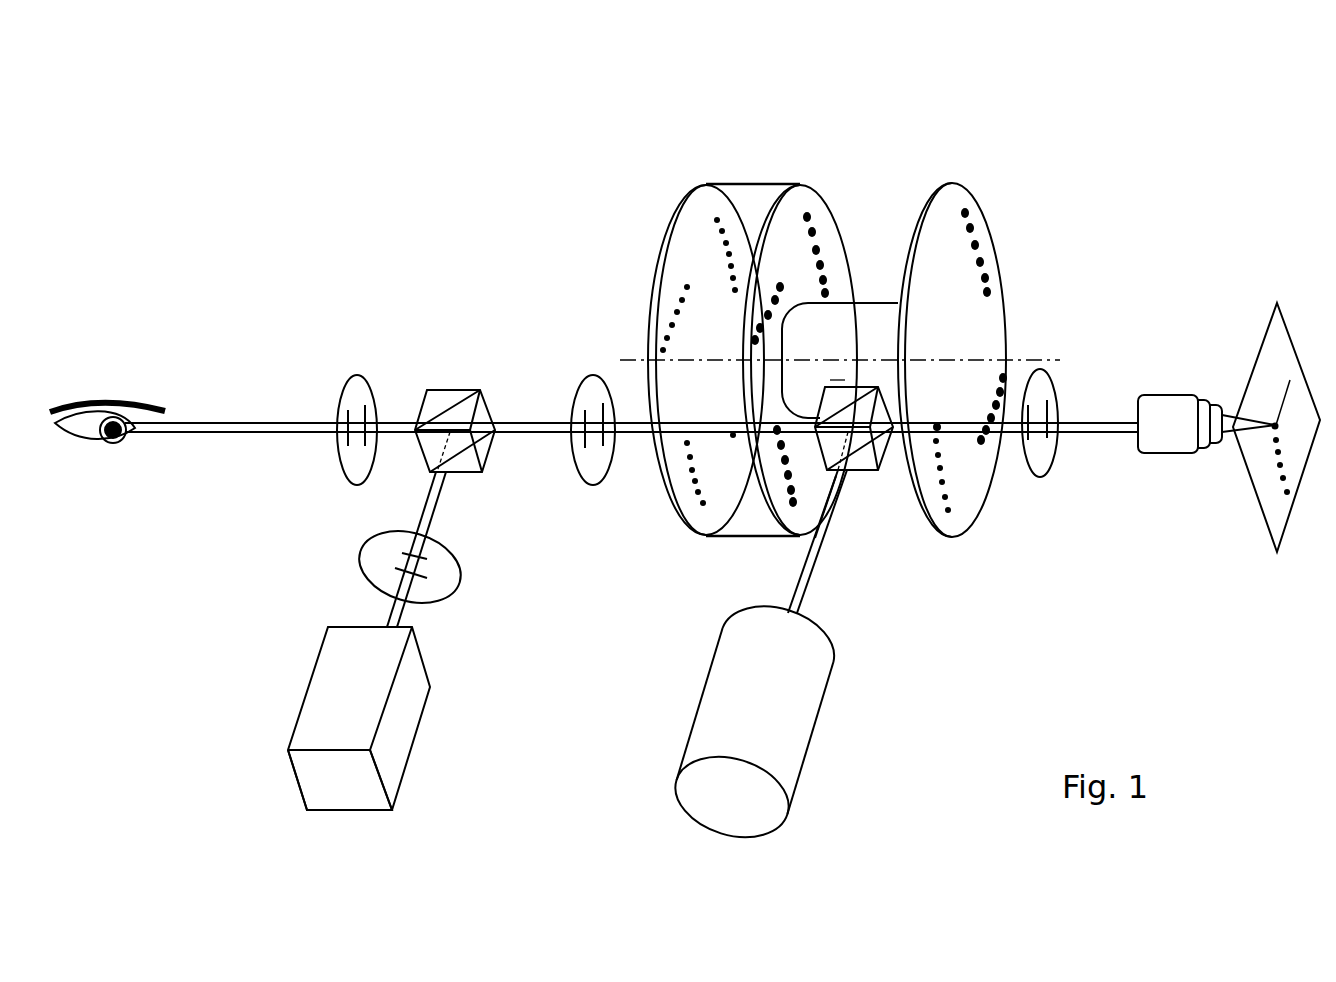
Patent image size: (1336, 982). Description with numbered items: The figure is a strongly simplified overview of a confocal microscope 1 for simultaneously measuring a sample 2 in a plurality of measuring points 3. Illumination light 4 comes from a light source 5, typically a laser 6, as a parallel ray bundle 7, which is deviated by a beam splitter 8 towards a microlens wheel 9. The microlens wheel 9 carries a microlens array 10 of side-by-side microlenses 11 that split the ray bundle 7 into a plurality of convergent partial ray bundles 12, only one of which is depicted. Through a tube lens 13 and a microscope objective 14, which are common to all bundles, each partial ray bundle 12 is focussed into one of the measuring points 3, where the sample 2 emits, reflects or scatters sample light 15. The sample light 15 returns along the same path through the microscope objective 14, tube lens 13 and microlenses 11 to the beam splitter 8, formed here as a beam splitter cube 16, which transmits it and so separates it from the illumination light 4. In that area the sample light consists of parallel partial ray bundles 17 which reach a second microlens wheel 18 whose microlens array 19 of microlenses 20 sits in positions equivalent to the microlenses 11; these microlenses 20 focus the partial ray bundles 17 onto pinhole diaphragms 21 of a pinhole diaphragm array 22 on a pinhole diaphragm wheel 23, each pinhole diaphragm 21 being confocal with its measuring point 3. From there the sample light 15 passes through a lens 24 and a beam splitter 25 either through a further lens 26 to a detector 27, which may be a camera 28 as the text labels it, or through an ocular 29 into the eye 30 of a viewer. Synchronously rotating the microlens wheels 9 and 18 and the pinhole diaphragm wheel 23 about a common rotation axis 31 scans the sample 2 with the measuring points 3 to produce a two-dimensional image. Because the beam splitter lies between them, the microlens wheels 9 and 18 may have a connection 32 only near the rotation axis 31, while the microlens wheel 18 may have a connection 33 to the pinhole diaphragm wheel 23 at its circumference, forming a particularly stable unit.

The confocal microscope 1 is at (1008, 150).
The sample 2 is at (1272, 340).
The measuring points 3 is at (1293, 372).
The illumination light 4 is at (804, 583).
The light source 5 is at (818, 697).
The laser 6 is at (800, 747).
The parallel ray bundle 7 is at (818, 541).
The beam splitter 8 is at (825, 455).
The microlens wheel 9 is at (958, 528).
The microlens array 10 is at (968, 492).
The microlenses 11 is at (940, 455).
The convergent partial ray bundles 12 is at (937, 427).
The tube lens 13 is at (1055, 387).
The microscope objective 14 is at (1167, 403).
The sample light 15 is at (630, 420).
The beam splitter cube 16 is at (835, 393).
The parallel partial ray bundles 17 is at (793, 447).
The second microlens wheel 18 is at (803, 192).
The microlens array 19 is at (685, 511).
The microlenses 20 is at (775, 440).
The pinhole diaphragms 21 is at (688, 443).
The pinhole diaphragm array 22 is at (571, 351).
The pinhole diaphragm wheel 23 is at (680, 203).
The lens 24 is at (588, 467).
The beam splitter 25 is at (475, 470).
The further lens 26 is at (457, 590).
The detector 27 is at (408, 723).
The detector housing 28 is at (395, 768).
The ocular 29 is at (338, 468).
The eye 30 is at (128, 443).
The rotation axis 31 is at (1043, 365).
The connection 32 is at (870, 313).
The connection 33 is at (748, 183).